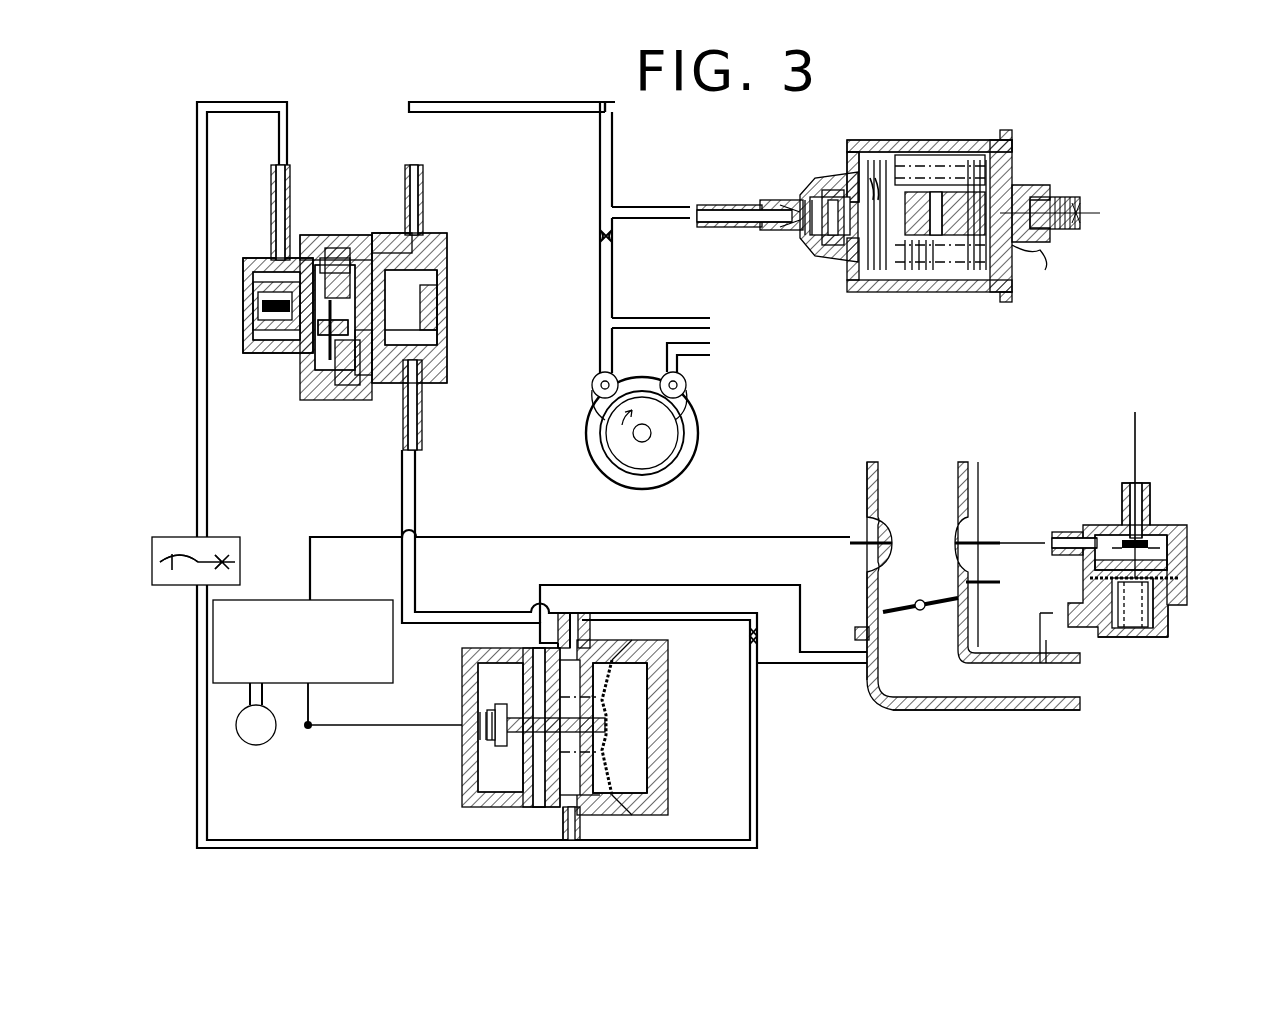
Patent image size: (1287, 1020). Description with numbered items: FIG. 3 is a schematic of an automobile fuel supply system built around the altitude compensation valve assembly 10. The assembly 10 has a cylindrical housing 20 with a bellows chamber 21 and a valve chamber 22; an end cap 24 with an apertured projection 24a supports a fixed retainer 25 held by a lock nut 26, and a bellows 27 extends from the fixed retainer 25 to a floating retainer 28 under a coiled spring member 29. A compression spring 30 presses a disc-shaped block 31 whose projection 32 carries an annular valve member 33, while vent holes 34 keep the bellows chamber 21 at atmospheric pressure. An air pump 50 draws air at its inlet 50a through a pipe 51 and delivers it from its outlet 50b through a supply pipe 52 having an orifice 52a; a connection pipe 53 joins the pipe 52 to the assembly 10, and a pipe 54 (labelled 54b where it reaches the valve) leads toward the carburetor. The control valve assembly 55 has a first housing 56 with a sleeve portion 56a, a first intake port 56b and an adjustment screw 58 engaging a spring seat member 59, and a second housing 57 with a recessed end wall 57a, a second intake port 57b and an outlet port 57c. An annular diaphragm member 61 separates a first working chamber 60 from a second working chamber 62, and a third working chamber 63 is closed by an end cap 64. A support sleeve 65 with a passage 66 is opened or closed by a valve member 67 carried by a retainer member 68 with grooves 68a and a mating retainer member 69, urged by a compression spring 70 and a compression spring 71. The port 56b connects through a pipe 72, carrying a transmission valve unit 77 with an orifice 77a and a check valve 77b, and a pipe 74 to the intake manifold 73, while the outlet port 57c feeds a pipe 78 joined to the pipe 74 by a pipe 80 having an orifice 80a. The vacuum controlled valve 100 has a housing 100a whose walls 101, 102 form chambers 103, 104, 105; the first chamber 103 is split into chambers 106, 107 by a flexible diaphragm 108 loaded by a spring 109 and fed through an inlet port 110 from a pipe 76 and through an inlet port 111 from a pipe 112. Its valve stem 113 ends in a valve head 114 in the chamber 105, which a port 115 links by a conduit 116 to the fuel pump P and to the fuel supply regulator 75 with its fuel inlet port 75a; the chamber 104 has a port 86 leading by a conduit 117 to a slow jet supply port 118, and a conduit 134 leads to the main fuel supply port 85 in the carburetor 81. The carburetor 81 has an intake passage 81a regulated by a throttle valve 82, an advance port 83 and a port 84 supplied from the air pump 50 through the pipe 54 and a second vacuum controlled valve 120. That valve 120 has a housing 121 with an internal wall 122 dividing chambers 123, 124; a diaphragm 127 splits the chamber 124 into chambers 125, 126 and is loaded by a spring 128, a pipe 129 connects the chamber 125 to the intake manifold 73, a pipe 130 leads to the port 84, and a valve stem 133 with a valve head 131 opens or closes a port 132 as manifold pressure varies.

The altitude compensation valve assembly 10 is at (936, 130).
The housing 20 is at (913, 128).
The bellows chamber 21 is at (972, 270).
The valve chamber 22 is at (806, 185).
The end cap 24 is at (1000, 160).
The apertured projection 24a is at (1030, 252).
The fixed retainer 25 is at (1025, 185).
The lock nut 26 is at (1055, 200).
The bellows 27 is at (915, 268).
The floating retainer 28 is at (870, 178).
The coiled spring member 29 is at (955, 165).
The compression spring 30 is at (828, 190).
The disc-shaped block 31 is at (830, 250).
The projection 32 is at (760, 228).
The annular valve member 33 is at (805, 245).
The vent holes 34 is at (855, 280).
The air pump 50 is at (699, 440).
The inlet 50a is at (688, 390).
The outlet 50b is at (592, 390).
The pipe 51 is at (705, 348).
The supply pipe 52 is at (600, 285).
The orifice 52a is at (613, 240).
The connection pipe 53 is at (648, 207).
The pipe 54 is at (684, 318).
The fuel line to regulator (at regulator) 54b is at (1140, 418).
The control valve assembly 55 is at (352, 221).
The first housing 56 is at (262, 232).
The sleeve portion 56a is at (250, 303).
The first intake port 56b is at (271, 185).
The second housing 57 is at (440, 260).
The inwardly recessed end wall 57a is at (440, 285).
The second intake port 57b is at (423, 183).
The outlet port 57c is at (422, 430).
The adjustment screw 58 is at (262, 314).
The spring seat member 59 is at (258, 293).
The first working chamber 60 is at (318, 260).
The annular diaphragm member 61 is at (330, 280).
The second working chamber 62 is at (345, 262).
The third working chamber 63 is at (430, 300).
The end cap 64 is at (437, 318).
The support sleeve 65 is at (363, 345).
The axially extending passage 66 is at (430, 335).
The valve member 67 is at (347, 360).
The cylindrical flanged retainer member 68 is at (318, 330).
The radially extending grooves 68a is at (392, 237).
The mating flanged retainer member 69 is at (330, 340).
The compression spring 70 is at (336, 330).
The compression spring 71 is at (255, 268).
The pipe 72 is at (195, 750).
The intake manifold 73 is at (960, 712).
The pipe 74 is at (815, 665).
The fuel supply regulator 75 is at (286, 588).
The fuel inlet port 75a is at (318, 695).
The pipe 76 is at (563, 835).
The transmission valve unit 77 is at (163, 532).
The orifice 77a is at (215, 555).
The check valve 77b is at (160, 570).
The pipe 78 is at (470, 612).
The pipe 80 is at (700, 612).
The orifice 80a is at (760, 630).
The carburetor 81 is at (959, 440).
The intake passage 81a is at (898, 563).
The throttle valve 82 is at (915, 610).
The advance port 83 is at (962, 582).
The port 84 is at (972, 528).
The main fuel supply port 85 is at (882, 528).
The port 86 is at (540, 655).
The vacuum controlled valve 100 is at (679, 815).
The cylindrical hollow housing 100a is at (668, 745).
The internal transverse wall 101 is at (590, 790).
The internal transverse wall 102 is at (530, 790).
The first chamber 103 is at (641, 695).
The chamber 104 is at (540, 780).
The chamber 105 is at (475, 675).
The chamber 106 is at (630, 755).
The chamber 107 is at (592, 752).
The flexible diaphragm 108 is at (592, 697).
The spring 109 is at (610, 670).
The inlet port 110 is at (572, 830).
The inlet port 111 is at (585, 640).
The pipe 112 is at (562, 640).
The valve stem 113 is at (610, 725).
The valve head 114 is at (500, 770).
The port 115 is at (475, 735).
The conduit 116 is at (300, 690).
The conduit 117 is at (800, 592).
The slow jet supply port 118 is at (880, 655).
The vacuum controlled valve 120 is at (1197, 525).
The housing 121 is at (1175, 590).
The internal wall 122 is at (1185, 545).
The chamber 123 is at (1100, 540).
The chamber 124 is at (1140, 600).
The chamber 125 is at (1137, 636).
The chamber 126 is at (1180, 570).
The diaphragm 127 is at (1090, 580).
The spring 128 is at (1168, 605).
The pipe 129 is at (1040, 615).
The pipe 130 is at (1035, 537).
The valve head 131 is at (1150, 495).
The port 132 is at (1123, 500).
The valve stem 133 is at (1090, 560).
The conduit 134 is at (718, 537).
The fuel pump P is at (250, 745).